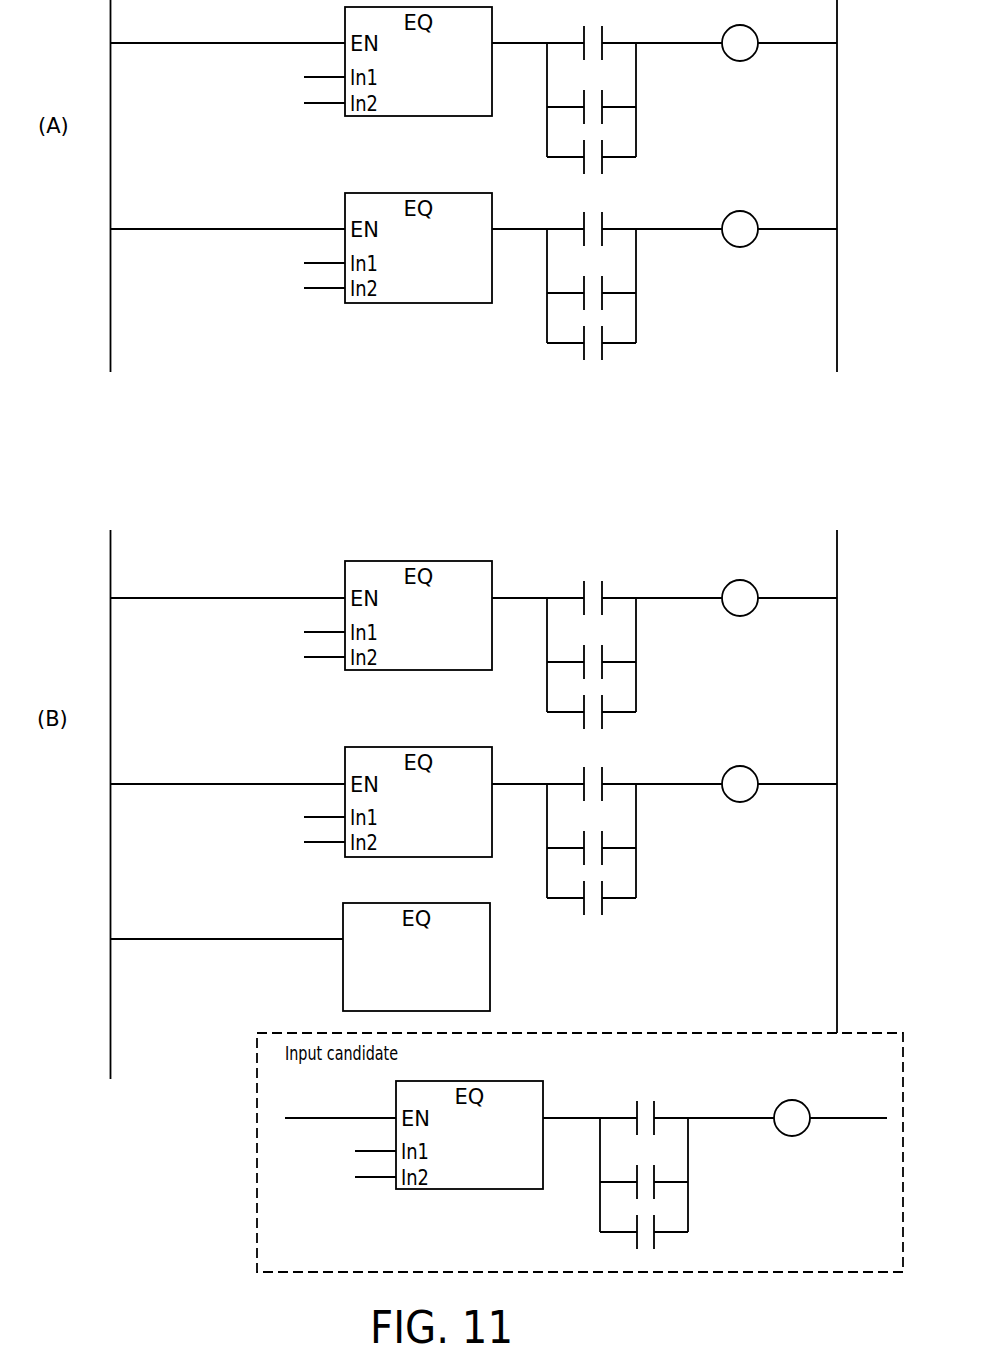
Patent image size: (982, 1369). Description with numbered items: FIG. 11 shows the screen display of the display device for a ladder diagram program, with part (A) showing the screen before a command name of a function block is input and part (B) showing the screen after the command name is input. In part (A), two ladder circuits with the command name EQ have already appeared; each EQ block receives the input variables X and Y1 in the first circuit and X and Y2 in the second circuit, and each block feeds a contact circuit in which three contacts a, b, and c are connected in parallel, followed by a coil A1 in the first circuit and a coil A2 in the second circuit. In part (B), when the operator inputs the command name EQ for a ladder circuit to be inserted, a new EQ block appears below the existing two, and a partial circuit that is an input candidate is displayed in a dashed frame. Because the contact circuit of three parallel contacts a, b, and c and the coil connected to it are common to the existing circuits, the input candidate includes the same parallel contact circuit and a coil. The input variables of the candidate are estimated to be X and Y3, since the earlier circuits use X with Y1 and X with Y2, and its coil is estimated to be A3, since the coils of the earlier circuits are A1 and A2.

The coil A1 is at (740, 308).
The coil A2 is at (740, 494).
The coil A3 is at (792, 1105).
The contact a is at (619, 567).
The contact b is at (619, 632).
The contact c is at (619, 683).
The input variable X is at (340, 614).
The input variable Y1 is at (310, 380).
The input variable Y2 is at (310, 565).
The input variable Y3 is at (361, 1177).